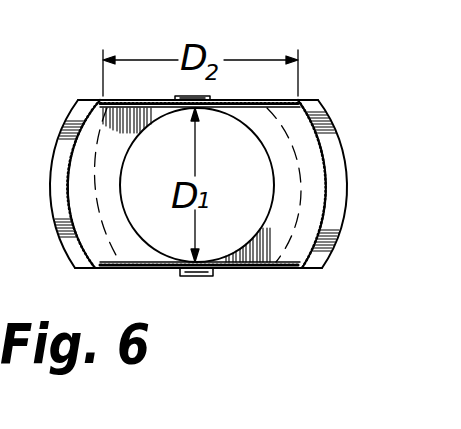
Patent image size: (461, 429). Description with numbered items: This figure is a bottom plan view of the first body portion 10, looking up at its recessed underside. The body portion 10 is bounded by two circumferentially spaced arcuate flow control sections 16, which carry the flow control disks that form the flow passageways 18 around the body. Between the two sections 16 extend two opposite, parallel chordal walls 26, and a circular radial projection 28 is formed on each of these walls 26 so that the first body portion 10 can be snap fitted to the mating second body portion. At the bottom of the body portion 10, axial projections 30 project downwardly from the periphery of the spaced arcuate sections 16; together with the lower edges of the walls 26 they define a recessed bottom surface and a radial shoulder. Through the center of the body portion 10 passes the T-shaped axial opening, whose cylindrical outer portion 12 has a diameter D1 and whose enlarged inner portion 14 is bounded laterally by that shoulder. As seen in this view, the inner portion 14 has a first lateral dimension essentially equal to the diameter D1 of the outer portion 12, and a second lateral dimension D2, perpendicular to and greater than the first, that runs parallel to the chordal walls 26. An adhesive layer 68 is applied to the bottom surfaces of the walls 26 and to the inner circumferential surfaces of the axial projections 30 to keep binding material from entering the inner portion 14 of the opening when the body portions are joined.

The first body portion 10 is at (324, 59).
The outer portion of the axial opening 12 is at (155, 224).
The inner portion of the axial opening 14 is at (304, 134).
The flow control section 16 is at (74, 96).
The flow passageway 18 is at (302, 182).
The chordal wall 26 is at (272, 270).
The circular radial projection 28 is at (200, 277).
The axial projection 30 is at (322, 219).
The adhesive layer 68 is at (74, 182).